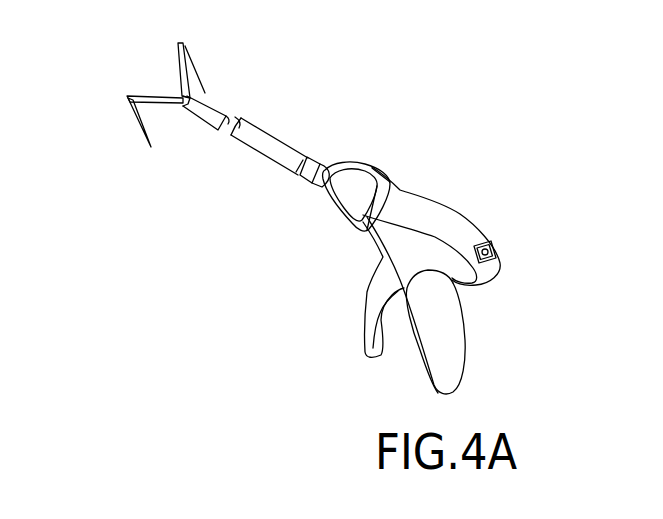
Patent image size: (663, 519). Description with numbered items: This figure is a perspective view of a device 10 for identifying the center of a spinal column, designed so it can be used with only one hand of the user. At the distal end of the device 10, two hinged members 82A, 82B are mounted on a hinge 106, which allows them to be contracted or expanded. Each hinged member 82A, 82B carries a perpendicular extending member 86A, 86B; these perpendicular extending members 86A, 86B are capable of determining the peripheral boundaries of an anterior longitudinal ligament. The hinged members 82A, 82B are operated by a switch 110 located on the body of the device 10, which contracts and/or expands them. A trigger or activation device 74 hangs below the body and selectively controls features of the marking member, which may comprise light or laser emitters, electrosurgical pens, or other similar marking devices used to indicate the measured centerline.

The device 10 is at (493, 155).
The trigger or activation device 74 is at (364, 339).
The hinged member 82A is at (128, 97).
The hinged member 82B is at (179, 59).
The perpendicular extending member 86A is at (143, 132).
The perpendicular extending member 86B is at (197, 73).
The hinge 106 is at (174, 89).
The switch 110 is at (492, 245).